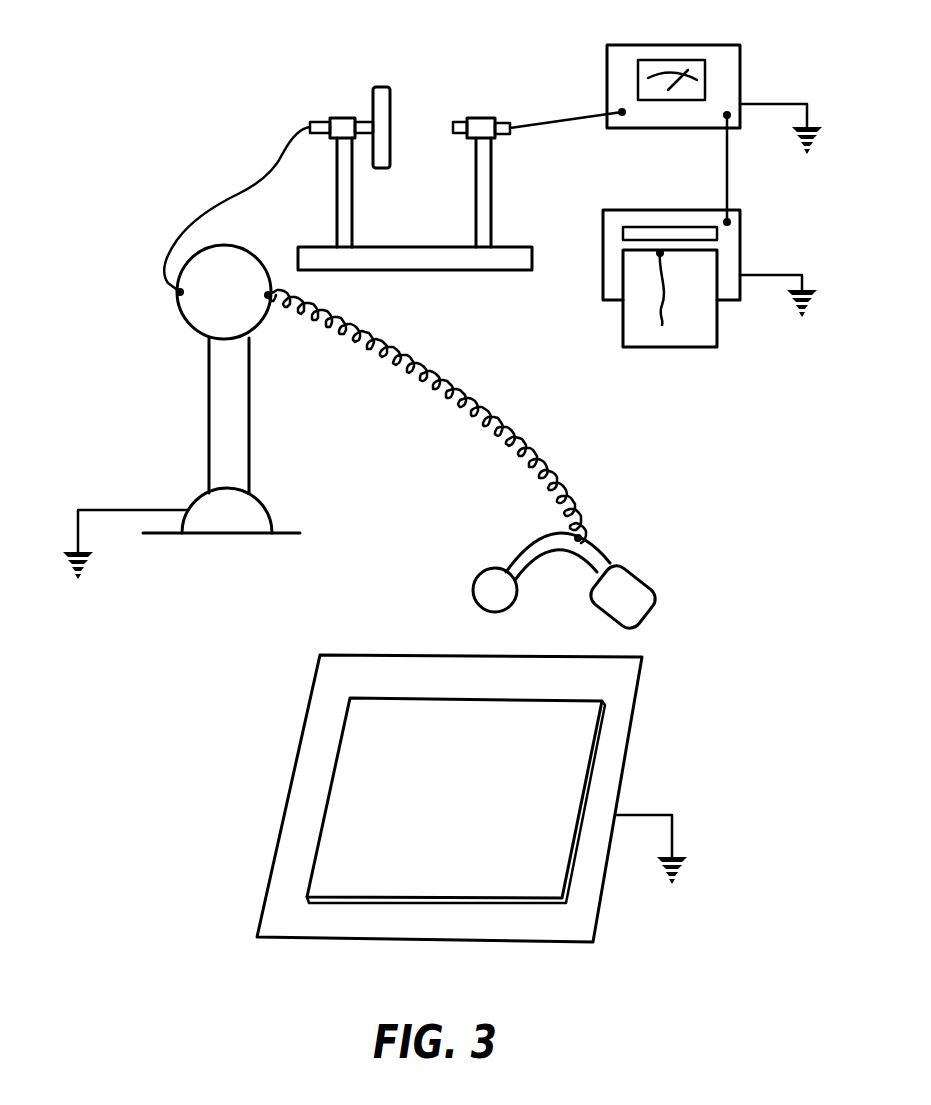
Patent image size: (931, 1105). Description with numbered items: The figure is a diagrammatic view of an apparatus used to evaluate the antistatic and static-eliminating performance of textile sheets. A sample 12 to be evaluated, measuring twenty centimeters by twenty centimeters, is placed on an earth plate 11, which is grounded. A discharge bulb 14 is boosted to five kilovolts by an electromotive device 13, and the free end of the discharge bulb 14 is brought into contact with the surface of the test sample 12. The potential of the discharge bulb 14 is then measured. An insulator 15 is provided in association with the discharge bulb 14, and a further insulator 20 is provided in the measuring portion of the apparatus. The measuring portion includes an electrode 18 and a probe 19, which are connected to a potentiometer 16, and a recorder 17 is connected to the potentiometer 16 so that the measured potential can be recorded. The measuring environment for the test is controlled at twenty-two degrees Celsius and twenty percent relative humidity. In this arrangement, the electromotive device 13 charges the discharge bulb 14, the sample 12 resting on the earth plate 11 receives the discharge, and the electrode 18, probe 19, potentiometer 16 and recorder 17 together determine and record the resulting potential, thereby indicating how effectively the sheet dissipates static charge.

The earth plate 11 is at (583, 923).
The sample 12 is at (466, 777).
The electromotive device 13 is at (195, 325).
The discharge bulb 14 is at (482, 570).
The insulator 15 is at (642, 570).
The potentiometer 16 is at (684, 45).
The recorder 17 is at (603, 213).
The electrode 18 is at (389, 100).
The probe 19 is at (465, 118).
The insulator 20 is at (470, 262).